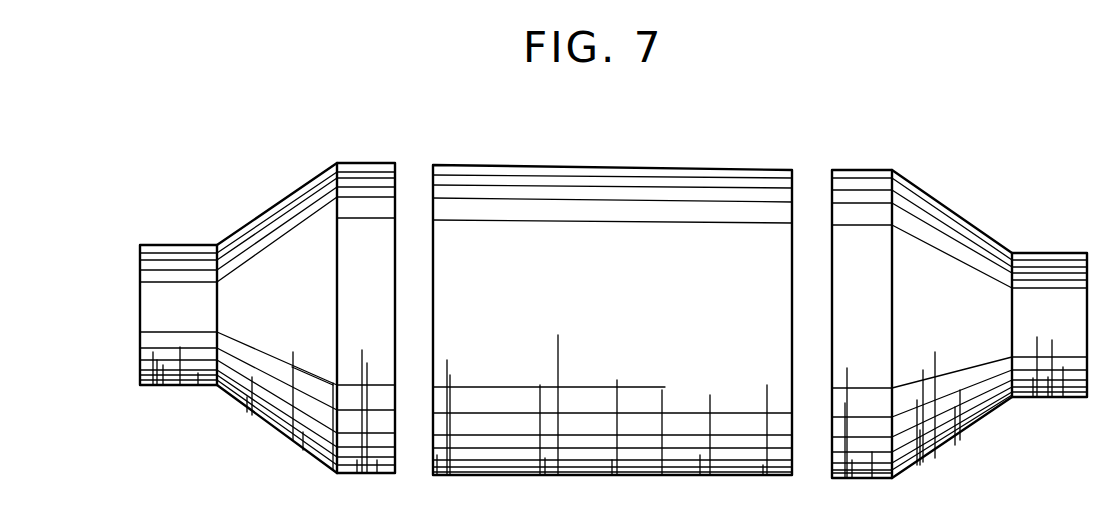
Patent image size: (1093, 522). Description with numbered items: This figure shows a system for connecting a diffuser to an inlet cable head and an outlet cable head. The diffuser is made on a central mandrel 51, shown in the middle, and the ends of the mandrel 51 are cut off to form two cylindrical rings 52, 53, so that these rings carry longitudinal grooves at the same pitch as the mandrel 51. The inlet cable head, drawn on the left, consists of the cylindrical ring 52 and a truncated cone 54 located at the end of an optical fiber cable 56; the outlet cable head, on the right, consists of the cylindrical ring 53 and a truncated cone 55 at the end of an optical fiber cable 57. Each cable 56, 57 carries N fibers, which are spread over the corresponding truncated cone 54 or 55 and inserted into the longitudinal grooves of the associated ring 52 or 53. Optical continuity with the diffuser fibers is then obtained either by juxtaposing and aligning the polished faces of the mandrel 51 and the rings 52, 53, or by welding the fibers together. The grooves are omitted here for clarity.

The mandrel 51 is at (618, 195).
The cylindrical ring 52 is at (372, 178).
The cylindrical ring 53 is at (863, 195).
The truncated cone 54 is at (270, 232).
The truncated cone 55 is at (950, 233).
The optical fiber cable 56 is at (184, 262).
The optical fiber cable 57 is at (1040, 268).